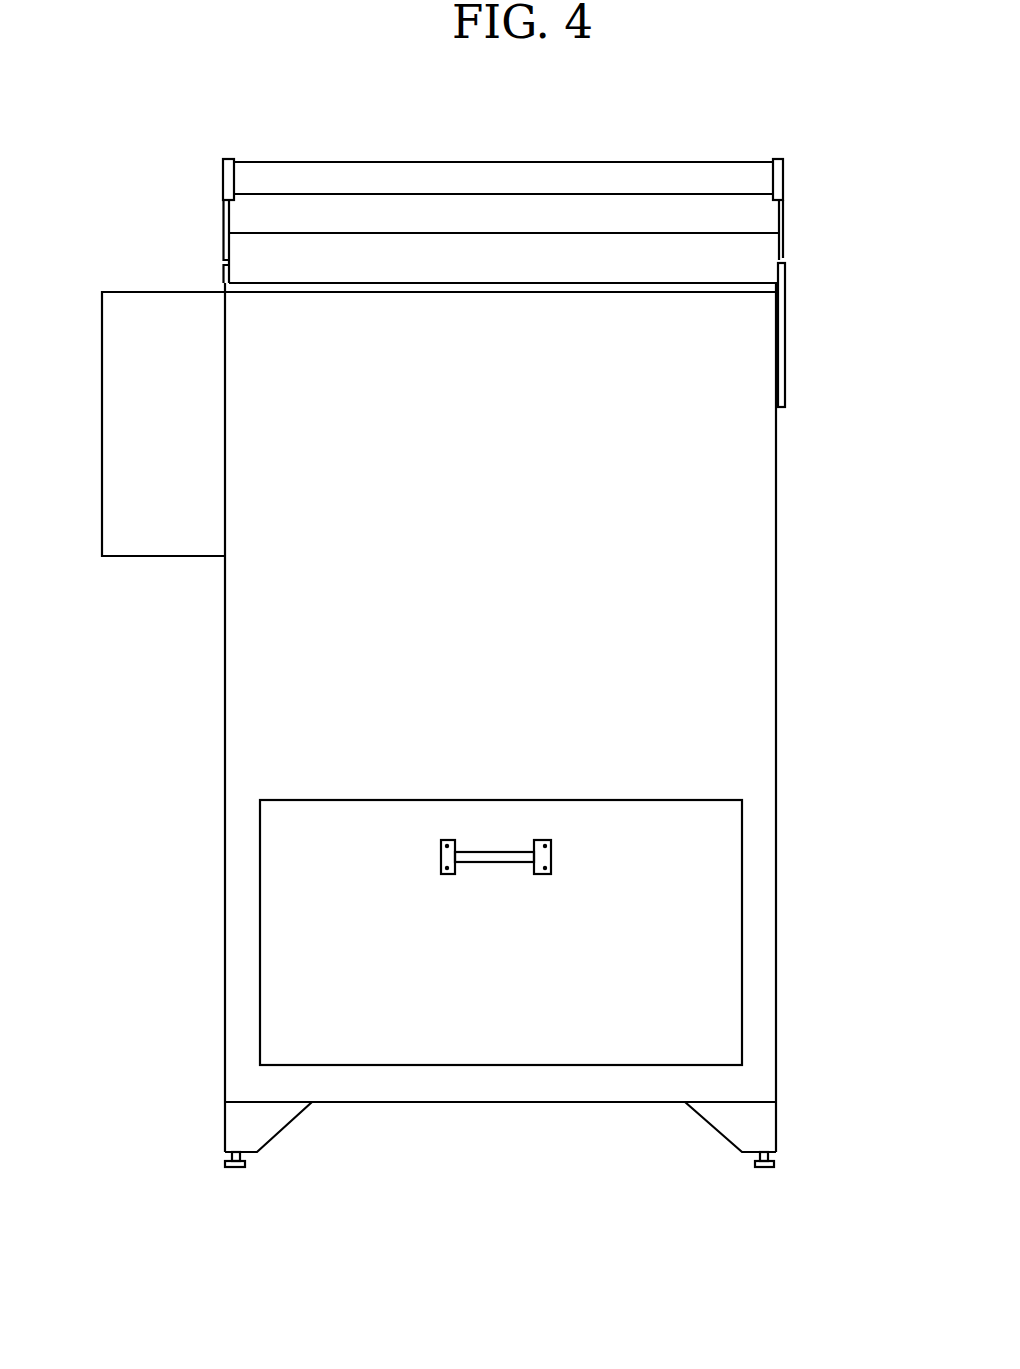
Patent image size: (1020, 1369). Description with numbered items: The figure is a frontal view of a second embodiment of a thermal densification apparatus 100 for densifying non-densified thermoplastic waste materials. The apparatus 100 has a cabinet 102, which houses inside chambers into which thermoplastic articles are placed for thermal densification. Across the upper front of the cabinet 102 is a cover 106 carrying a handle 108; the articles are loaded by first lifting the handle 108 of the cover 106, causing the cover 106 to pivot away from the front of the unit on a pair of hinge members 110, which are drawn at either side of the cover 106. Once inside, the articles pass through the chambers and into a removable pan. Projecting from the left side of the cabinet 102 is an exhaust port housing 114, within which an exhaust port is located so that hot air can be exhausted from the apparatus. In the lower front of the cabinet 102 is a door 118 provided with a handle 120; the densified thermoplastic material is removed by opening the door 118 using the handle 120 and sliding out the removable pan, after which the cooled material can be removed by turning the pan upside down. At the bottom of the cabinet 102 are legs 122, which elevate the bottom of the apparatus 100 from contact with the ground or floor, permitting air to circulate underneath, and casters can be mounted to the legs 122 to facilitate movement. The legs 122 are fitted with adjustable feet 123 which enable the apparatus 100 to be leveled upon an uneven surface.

The thermal densification apparatus 100 is at (802, 598).
The cabinet 102 is at (777, 747).
The cover 106 is at (783, 214).
The handle 108 is at (663, 162).
The hinge members 110 is at (222, 280).
The exhaust port housing 114 is at (102, 333).
The door 118 is at (618, 799).
The handle 120 is at (483, 863).
The legs 122 is at (290, 1123).
The adjustable feet 123 is at (232, 1170).